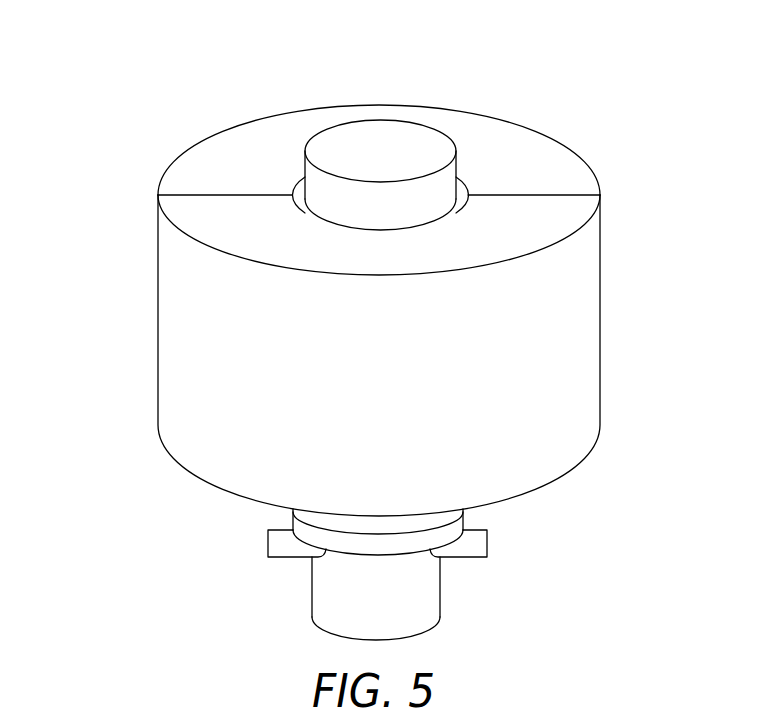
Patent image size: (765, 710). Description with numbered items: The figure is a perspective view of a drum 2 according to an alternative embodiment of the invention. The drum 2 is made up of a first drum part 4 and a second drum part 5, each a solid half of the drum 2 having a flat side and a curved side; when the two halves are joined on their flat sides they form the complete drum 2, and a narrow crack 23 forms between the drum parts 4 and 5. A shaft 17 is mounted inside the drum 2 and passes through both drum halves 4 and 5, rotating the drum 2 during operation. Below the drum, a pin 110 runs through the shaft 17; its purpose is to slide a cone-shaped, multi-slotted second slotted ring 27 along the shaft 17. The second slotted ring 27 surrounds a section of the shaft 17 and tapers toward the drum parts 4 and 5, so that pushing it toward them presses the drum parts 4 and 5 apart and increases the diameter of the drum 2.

The drum 2 is at (118, 116).
The first drum part 4 is at (580, 423).
The second drum part 5 is at (577, 178).
The shaft 17 is at (438, 137).
The crack 23 is at (222, 195).
The second slotted ring 27 is at (292, 515).
The pin 110 is at (477, 538).